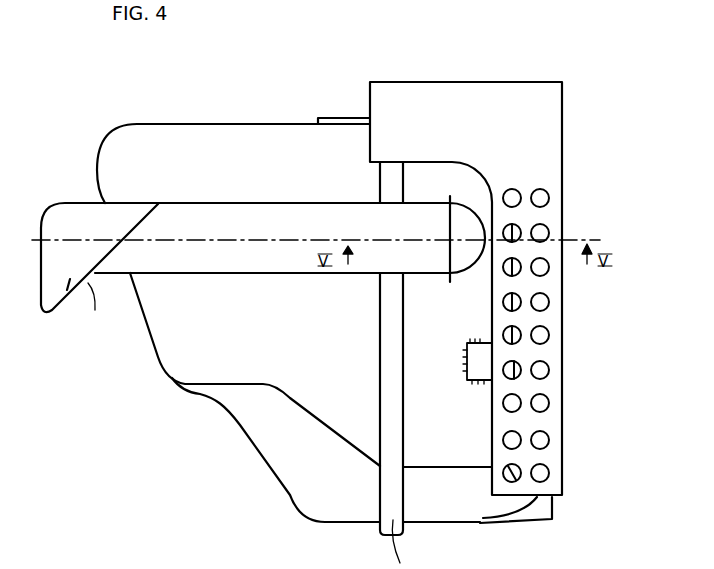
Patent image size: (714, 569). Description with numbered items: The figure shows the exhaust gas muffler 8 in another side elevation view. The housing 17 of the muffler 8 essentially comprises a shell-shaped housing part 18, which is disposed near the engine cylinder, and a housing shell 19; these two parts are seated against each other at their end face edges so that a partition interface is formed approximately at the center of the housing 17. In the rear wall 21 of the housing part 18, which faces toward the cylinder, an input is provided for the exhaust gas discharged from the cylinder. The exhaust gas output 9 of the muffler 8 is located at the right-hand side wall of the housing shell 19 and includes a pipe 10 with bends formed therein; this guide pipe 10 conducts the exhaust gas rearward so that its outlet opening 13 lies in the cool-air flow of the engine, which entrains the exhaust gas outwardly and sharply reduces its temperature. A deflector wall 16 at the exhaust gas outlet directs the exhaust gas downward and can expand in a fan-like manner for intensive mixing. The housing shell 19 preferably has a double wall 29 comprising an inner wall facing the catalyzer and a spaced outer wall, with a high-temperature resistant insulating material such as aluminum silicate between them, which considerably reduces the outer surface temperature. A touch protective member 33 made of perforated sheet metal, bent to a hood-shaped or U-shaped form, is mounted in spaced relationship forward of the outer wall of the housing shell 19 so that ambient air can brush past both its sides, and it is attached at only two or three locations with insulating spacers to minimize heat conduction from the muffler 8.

The exhaust gas muffler 8 is at (152, 428).
The exhaust gas output 9 is at (414, 190).
The pipe 10 is at (283, 275).
The outlet opening 13 is at (102, 310).
The deflector wall 16 is at (70, 284).
The housing 17 is at (363, 523).
The housing part 18 is at (262, 450).
The housing shell 19 is at (450, 525).
The rear wall 21 is at (155, 360).
The double wall 29 is at (515, 300).
The touch protective member 33 is at (562, 410).